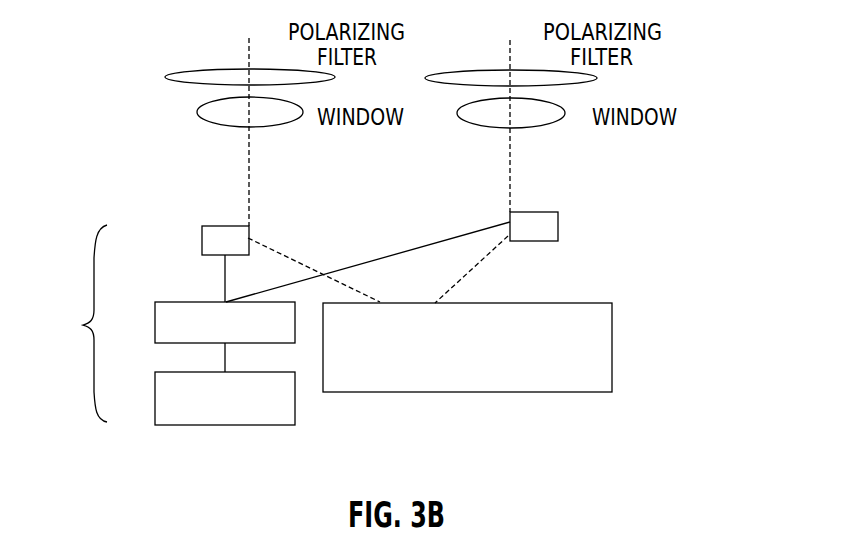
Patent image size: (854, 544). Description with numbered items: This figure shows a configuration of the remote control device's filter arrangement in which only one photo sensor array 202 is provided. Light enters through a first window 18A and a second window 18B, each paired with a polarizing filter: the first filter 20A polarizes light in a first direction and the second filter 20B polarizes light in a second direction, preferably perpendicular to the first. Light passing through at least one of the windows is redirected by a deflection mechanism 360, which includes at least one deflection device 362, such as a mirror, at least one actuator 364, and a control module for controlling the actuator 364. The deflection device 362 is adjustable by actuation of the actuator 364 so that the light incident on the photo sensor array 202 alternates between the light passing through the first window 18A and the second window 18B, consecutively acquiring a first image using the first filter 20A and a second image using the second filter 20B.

The first filter 20A is at (197, 70).
The first window 18A is at (199, 114).
The second filter 20B is at (497, 70).
The second window 18B is at (498, 128).
The deflection mechanism 360 is at (324, 300).
The deflection device 362 is at (226, 226).
The actuator 364 is at (184, 302).
The photo sensor array 202 is at (578, 303).